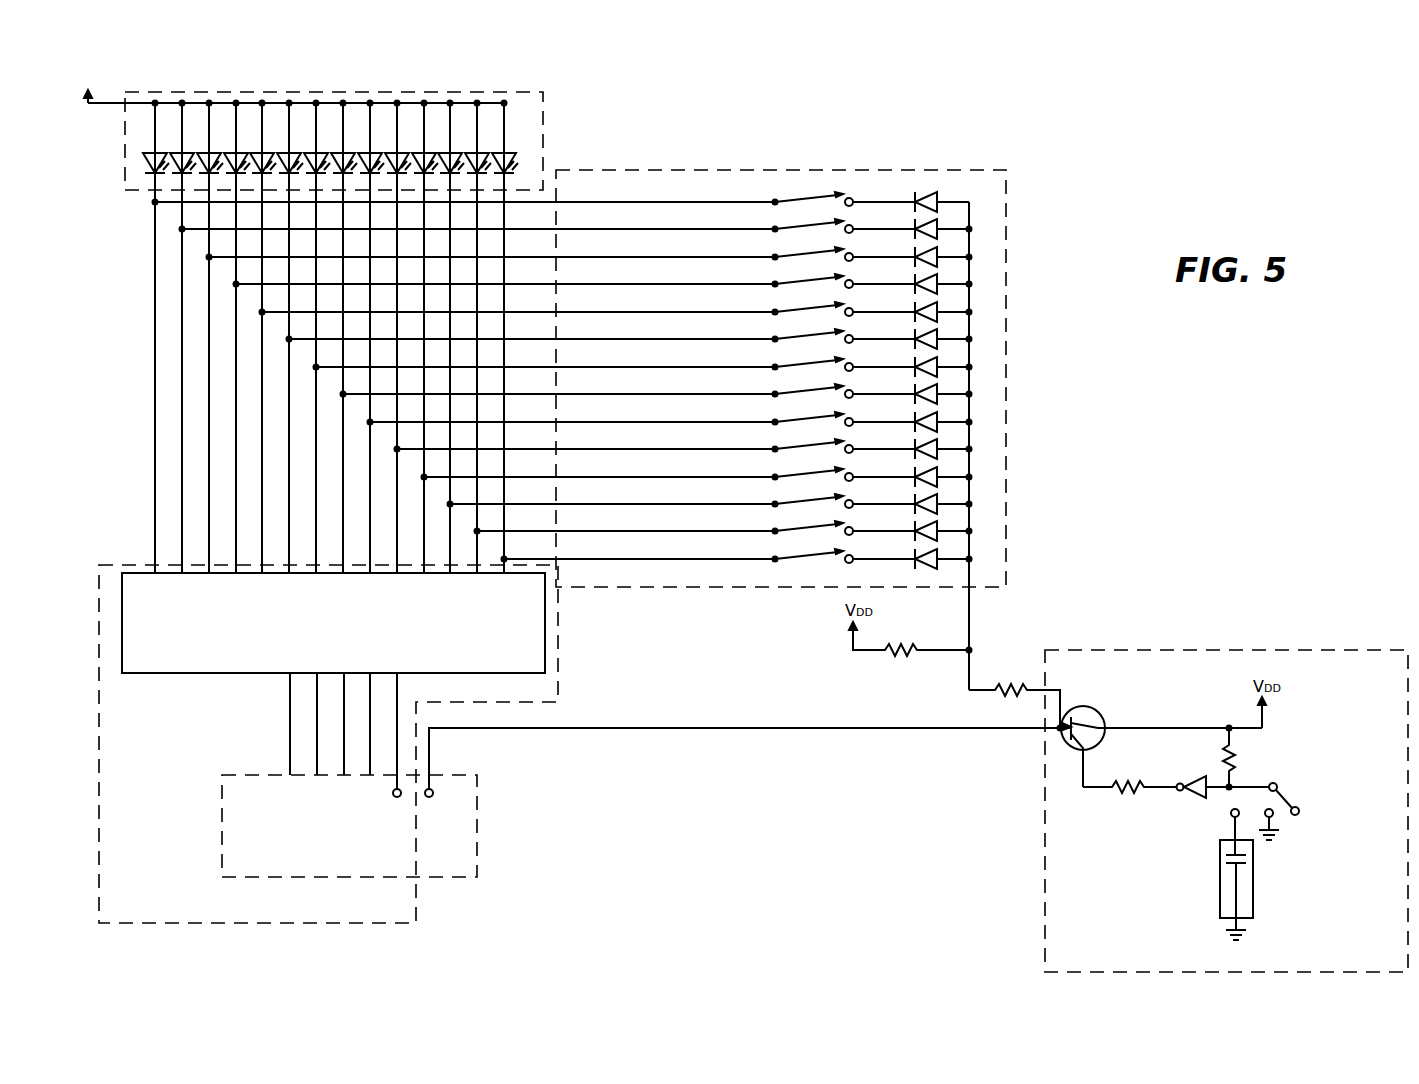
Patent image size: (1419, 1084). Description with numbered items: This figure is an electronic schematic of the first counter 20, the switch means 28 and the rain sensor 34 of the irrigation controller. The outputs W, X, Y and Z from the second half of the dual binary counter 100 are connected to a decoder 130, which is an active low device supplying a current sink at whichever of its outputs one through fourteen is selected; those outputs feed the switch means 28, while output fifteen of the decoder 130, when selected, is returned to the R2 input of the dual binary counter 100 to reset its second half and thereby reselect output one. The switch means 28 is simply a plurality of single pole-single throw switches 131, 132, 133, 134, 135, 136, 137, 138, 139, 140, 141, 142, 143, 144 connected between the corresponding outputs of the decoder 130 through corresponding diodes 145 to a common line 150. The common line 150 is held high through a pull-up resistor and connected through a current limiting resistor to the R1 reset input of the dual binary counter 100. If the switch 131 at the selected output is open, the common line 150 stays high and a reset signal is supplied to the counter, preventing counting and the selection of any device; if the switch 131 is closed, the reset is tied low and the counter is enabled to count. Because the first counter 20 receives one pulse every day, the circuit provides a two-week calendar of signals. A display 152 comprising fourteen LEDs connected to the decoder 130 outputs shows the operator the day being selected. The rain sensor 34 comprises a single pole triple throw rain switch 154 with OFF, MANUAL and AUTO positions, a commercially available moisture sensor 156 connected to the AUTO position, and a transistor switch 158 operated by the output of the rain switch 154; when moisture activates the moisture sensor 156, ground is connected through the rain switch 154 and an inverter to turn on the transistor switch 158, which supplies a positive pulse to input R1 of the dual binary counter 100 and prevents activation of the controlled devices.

The first counter 20 is at (99, 772).
The switch means 28 is at (1007, 333).
The rain sensor 34 is at (1188, 650).
The dual binary counter 100 is at (477, 835).
The decoder 130 is at (200, 673).
The single pole-single throw switch 131 is at (791, 202).
The single pole-single throw switch 132 is at (791, 229).
The single pole-single throw switch 133 is at (791, 257).
The single pole-single throw switch 134 is at (791, 284).
The single pole-single throw switch 135 is at (791, 312).
The single pole-single throw switch 136 is at (791, 339).
The single pole-single throw switch 137 is at (791, 367).
The single pole-single throw switch 138 is at (791, 394).
The single pole-single throw switch 139 is at (791, 422).
The single pole-single throw switch 140 is at (791, 449).
The single pole-single throw switch 141 is at (791, 477).
The single pole-single throw switch 142 is at (791, 504).
The single pole-single throw switch 143 is at (791, 531).
The single pole-single throw switch 144 is at (791, 559).
The diodes 145 is at (922, 192).
The common line 150 is at (970, 263).
The display 152 is at (543, 105).
The rain switch 154 is at (1283, 778).
The moisture sensor 156 is at (1220, 882).
The transistor switch 158 is at (1100, 715).